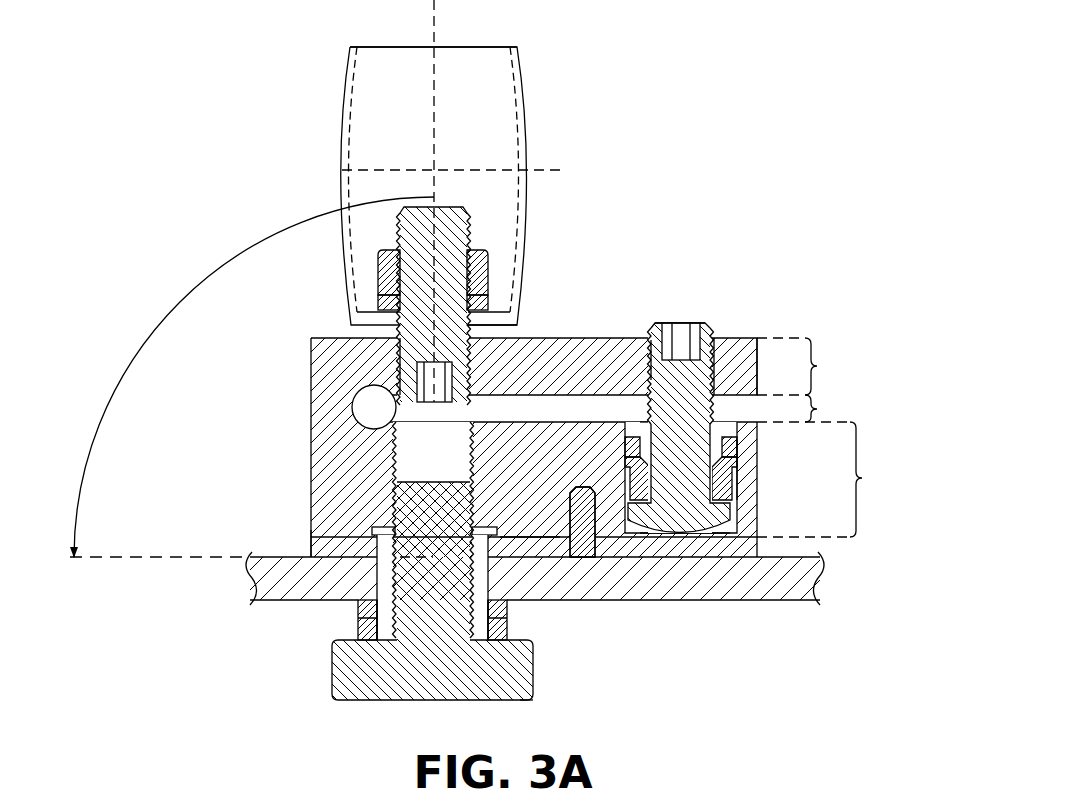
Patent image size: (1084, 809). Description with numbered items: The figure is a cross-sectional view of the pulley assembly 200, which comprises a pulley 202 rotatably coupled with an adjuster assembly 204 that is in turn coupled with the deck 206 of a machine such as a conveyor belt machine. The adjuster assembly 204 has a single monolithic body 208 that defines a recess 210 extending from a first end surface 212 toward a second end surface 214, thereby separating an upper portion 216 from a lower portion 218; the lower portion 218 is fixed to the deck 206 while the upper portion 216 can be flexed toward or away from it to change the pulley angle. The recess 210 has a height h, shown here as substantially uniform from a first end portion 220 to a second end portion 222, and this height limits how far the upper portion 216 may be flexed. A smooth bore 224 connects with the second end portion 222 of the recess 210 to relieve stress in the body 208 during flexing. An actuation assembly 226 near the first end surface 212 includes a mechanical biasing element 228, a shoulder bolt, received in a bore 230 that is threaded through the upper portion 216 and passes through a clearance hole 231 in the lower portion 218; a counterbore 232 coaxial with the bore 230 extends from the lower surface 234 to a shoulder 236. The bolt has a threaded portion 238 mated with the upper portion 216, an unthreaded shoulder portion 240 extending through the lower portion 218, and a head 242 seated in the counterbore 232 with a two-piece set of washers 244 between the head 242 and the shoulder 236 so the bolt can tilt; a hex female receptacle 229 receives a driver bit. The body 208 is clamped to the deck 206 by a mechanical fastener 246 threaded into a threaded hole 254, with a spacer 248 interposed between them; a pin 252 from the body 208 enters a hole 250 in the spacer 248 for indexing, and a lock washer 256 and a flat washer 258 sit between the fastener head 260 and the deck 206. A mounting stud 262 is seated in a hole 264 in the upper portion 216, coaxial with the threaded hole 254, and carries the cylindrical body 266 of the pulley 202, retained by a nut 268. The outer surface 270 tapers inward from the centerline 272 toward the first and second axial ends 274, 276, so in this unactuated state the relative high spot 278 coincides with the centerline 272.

The pulley assembly 200 is at (238, 65).
The pulley 202 is at (533, 70).
The adjuster assembly 204 is at (790, 298).
The deck 206 is at (756, 589).
The body 208 is at (504, 468).
The recess 210 is at (542, 406).
The first end surface 212 is at (757, 518).
The second end surface 214 is at (311, 470).
The upper portion 216 is at (817, 366).
The lower portion 218 is at (862, 478).
The first end portion 220 is at (736, 385).
The second end portion 222 is at (415, 372).
The bore 224 is at (353, 410).
The actuation assembly 226 is at (695, 316).
The mechanical biasing element 228 is at (664, 413).
The female receptacle 229 is at (678, 323).
The bore 230 is at (645, 362).
The clearance hole 231 is at (632, 427).
The counterbore 232 is at (738, 486).
The lower surface 234 is at (525, 534).
The shoulder 236 is at (729, 427).
The threaded portion 238 is at (641, 352).
The unthreaded shoulder portion 240 is at (638, 487).
The head 242 is at (723, 536).
The washers 244 is at (743, 463).
The mechanical fastener 246 is at (539, 706).
The spacer 248 is at (304, 545).
The hole 250 is at (568, 533).
The pin 252 is at (583, 540).
The threaded hole 254 is at (392, 462).
The lock washer 256 is at (362, 641).
The flat washer 258 is at (358, 614).
The head 260 is at (417, 687).
The mounting stud 262 is at (428, 199).
The hole 264 is at (402, 358).
The cylindrical body 266 is at (462, 134).
The nut 268 is at (380, 266).
The outer surface 270 is at (525, 98).
The centerline 272 is at (542, 169).
The first axial end 274 is at (385, 45).
The second axial end 276 is at (512, 332).
The relative high spot 278 is at (338, 169).
The height h is at (817, 409).